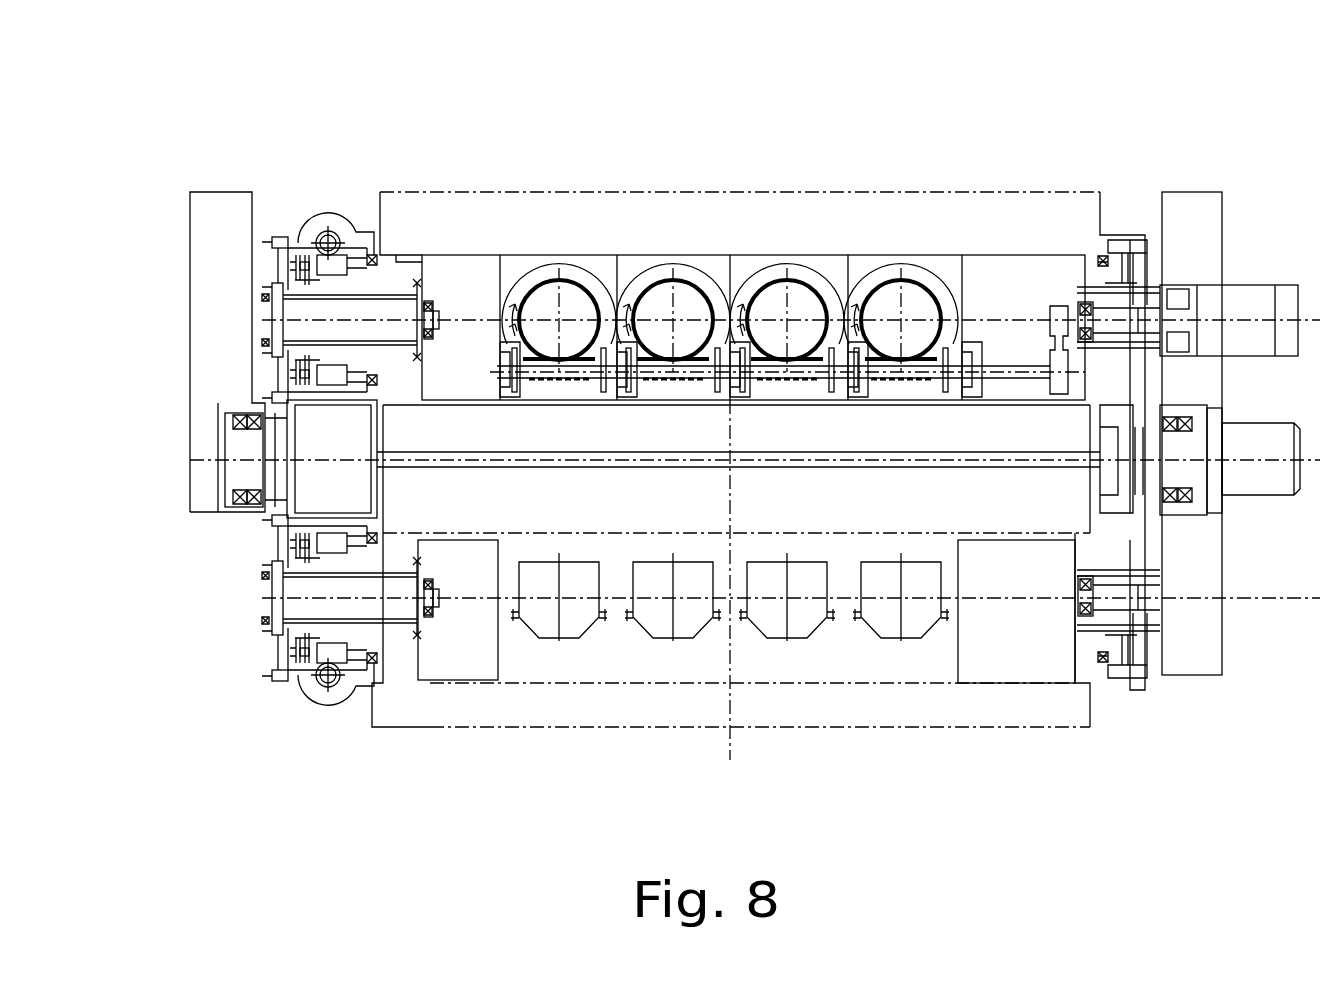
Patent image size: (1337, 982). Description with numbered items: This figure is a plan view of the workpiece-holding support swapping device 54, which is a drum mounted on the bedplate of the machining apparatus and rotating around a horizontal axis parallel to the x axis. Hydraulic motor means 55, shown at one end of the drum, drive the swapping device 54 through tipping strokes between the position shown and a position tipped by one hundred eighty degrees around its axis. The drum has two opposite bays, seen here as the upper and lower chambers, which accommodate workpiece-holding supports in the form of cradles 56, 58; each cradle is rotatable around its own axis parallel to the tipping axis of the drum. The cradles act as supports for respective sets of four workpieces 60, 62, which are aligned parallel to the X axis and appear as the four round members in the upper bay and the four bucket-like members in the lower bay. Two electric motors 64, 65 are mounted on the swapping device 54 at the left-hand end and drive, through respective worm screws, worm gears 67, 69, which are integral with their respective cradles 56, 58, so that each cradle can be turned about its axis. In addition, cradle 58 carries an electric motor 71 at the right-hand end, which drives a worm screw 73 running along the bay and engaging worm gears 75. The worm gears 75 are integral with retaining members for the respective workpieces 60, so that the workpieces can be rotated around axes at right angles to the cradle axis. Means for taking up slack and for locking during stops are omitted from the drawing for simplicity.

The workpiece-holding support swapping device 54 is at (270, 547).
The hydraulic motor means 55 is at (1262, 480).
The cradle 56 is at (1035, 652).
The cradle 58 is at (460, 287).
The workpieces 60 is at (900, 300).
The workpieces 62 is at (920, 627).
The electric motor 64 is at (330, 680).
The electric motor 65 is at (303, 253).
The worm gear 67 is at (307, 258).
The worm gear 69 is at (300, 660).
The electric motor 71 is at (1253, 290).
The worm screw 73 is at (982, 365).
The worm gears 75 is at (545, 300).